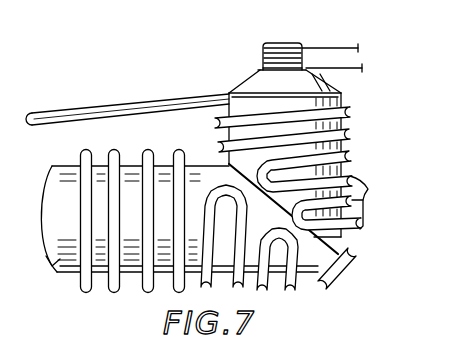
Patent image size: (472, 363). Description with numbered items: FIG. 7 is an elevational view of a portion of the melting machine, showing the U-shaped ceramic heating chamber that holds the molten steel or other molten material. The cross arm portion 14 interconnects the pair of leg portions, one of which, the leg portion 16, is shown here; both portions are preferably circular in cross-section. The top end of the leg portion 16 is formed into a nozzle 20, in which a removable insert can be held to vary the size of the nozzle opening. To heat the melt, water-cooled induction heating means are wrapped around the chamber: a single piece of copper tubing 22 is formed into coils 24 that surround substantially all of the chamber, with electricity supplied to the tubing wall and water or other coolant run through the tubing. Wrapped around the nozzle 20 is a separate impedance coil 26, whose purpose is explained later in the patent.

The cross arm portion 14 is at (132, 286).
The leg portion 16 is at (343, 140).
The nozzle 20 is at (263, 44).
The copper tubing 22 is at (106, 110).
The coils 24 is at (366, 190).
The impedance coil 26 is at (263, 57).